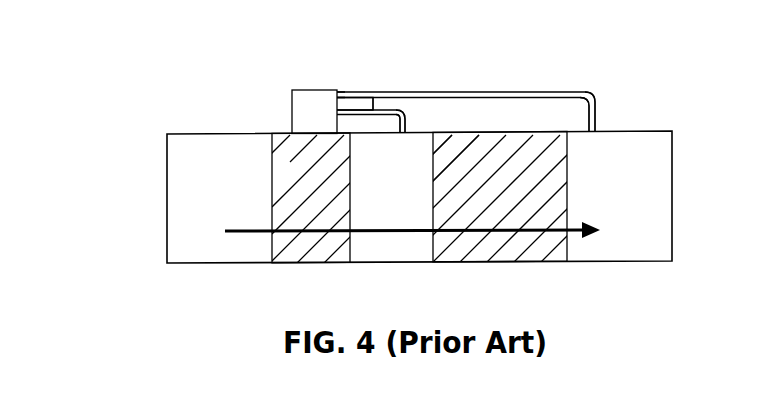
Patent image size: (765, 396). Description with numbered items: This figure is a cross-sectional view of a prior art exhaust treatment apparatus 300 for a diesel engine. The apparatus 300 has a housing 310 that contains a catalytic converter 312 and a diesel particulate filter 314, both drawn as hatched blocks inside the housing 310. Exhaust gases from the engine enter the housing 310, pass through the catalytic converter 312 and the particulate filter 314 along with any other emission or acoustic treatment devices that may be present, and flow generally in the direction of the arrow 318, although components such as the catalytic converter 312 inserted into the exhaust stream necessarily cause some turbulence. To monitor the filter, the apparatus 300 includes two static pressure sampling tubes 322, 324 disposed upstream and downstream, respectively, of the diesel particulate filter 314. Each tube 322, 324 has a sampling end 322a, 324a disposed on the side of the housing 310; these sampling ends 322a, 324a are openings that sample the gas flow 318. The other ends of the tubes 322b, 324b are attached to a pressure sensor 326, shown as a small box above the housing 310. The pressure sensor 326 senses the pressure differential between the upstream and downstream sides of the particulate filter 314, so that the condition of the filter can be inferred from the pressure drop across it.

The exhaust treatment apparatus 300 is at (126, 78).
The housing 310 is at (633, 130).
The catalytic converter 312 is at (310, 263).
The diesel particulate filter 314 is at (508, 263).
The arrow 318 is at (255, 230).
The static pressure sampling tube 322 is at (373, 96).
The sampling end 322a is at (407, 131).
The other end of tube 322b is at (339, 106).
The static pressure sampling tube 324 is at (502, 92).
The sampling end 324a is at (597, 128).
The other end of tube 324b is at (338, 92).
The pressure sensor 326 is at (333, 120).